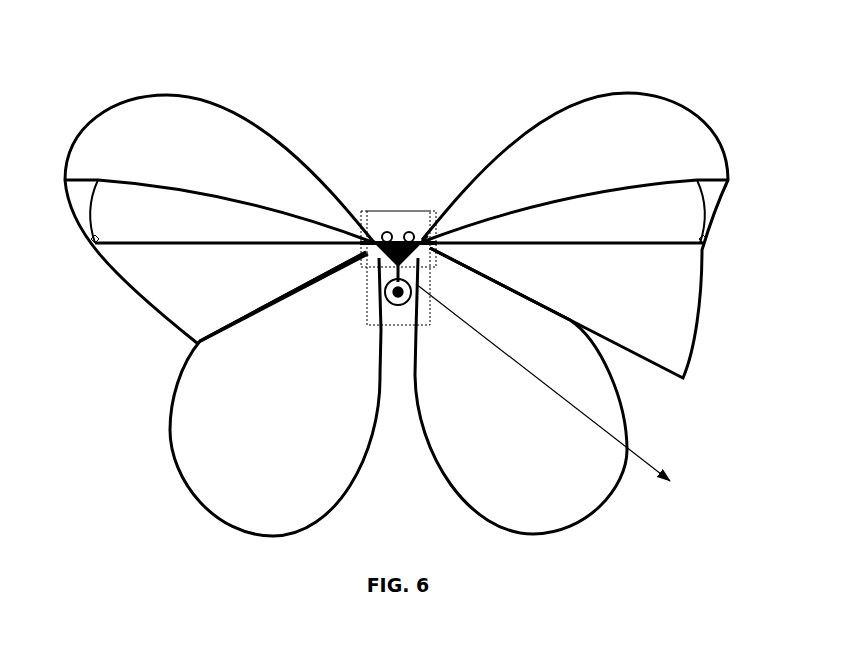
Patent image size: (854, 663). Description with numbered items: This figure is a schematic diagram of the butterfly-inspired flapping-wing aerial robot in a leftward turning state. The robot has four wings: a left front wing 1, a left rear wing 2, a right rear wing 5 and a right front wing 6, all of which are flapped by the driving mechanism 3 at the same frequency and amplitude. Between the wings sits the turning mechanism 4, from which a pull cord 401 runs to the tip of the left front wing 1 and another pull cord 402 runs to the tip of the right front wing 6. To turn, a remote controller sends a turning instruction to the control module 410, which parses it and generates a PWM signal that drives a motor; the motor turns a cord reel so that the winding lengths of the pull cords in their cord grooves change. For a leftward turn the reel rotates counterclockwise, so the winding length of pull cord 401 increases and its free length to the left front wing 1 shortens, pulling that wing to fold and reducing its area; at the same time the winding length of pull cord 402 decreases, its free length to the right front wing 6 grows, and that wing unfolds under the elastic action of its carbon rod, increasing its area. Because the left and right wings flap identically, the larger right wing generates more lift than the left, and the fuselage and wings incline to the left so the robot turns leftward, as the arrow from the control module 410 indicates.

The left front wing 1 is at (157, 212).
The left rear wing 2 is at (229, 397).
The driving mechanism 3 is at (390, 222).
The turning mechanism 4 is at (428, 246).
The pull cord 401 is at (293, 282).
The another pull cord 402 is at (472, 267).
The right rear wing 5 is at (510, 333).
The right front wing 6 is at (643, 205).
The control module 410 is at (557, 401).